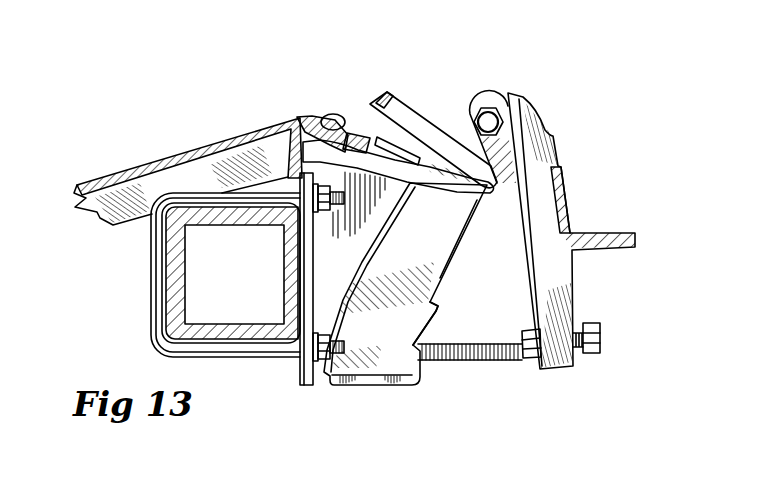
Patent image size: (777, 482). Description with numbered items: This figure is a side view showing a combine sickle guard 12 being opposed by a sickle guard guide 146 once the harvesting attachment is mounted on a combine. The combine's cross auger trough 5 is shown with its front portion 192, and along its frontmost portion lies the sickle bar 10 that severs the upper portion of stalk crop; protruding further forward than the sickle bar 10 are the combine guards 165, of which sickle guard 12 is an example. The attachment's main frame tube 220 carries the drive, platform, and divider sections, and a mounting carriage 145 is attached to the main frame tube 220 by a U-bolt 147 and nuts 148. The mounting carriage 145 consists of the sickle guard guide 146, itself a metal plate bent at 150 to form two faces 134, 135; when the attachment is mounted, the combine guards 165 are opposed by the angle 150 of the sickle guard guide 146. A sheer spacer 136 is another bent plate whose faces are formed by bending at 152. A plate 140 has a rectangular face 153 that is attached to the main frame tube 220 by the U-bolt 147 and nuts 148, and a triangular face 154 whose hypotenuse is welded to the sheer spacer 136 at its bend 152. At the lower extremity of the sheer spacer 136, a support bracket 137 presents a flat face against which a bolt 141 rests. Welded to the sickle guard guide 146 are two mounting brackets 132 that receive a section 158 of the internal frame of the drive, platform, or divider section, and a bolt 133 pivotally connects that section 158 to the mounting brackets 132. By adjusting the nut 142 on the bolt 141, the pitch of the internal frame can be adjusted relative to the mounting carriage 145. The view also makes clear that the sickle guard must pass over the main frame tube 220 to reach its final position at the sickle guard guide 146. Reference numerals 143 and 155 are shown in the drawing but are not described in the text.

The cross auger trough 5 is at (99, 181).
The sickle bar 10 is at (345, 102).
The sickle guard 12 is at (404, 133).
The mounting bracket 132 is at (471, 106).
The bolt 133 is at (487, 105).
The face 134 is at (397, 85).
The face 135 is at (496, 214).
The sheer spacer 136 is at (446, 287).
The support bracket 137 is at (417, 380).
The plate 140 is at (292, 378).
The bolt 141 is at (600, 337).
The nut 142 is at (528, 358).
The support bar 143 is at (567, 216).
The mounting carriage 145 is at (363, 397).
The sickle guard guide 146 is at (445, 100).
The U-bolt 147 is at (160, 345).
The nuts 148 is at (322, 227).
The bend 150 is at (438, 280).
The bend 152 is at (430, 256).
The rectangular face 153 is at (302, 360).
The triangular face 154 is at (419, 284).
The bar flange 155 is at (510, 178).
The section of internal frame 158 is at (500, 98).
The combine guards 165 is at (440, 184).
The front portion of auger trough 192 is at (298, 117).
The main frame tube 220 is at (166, 309).